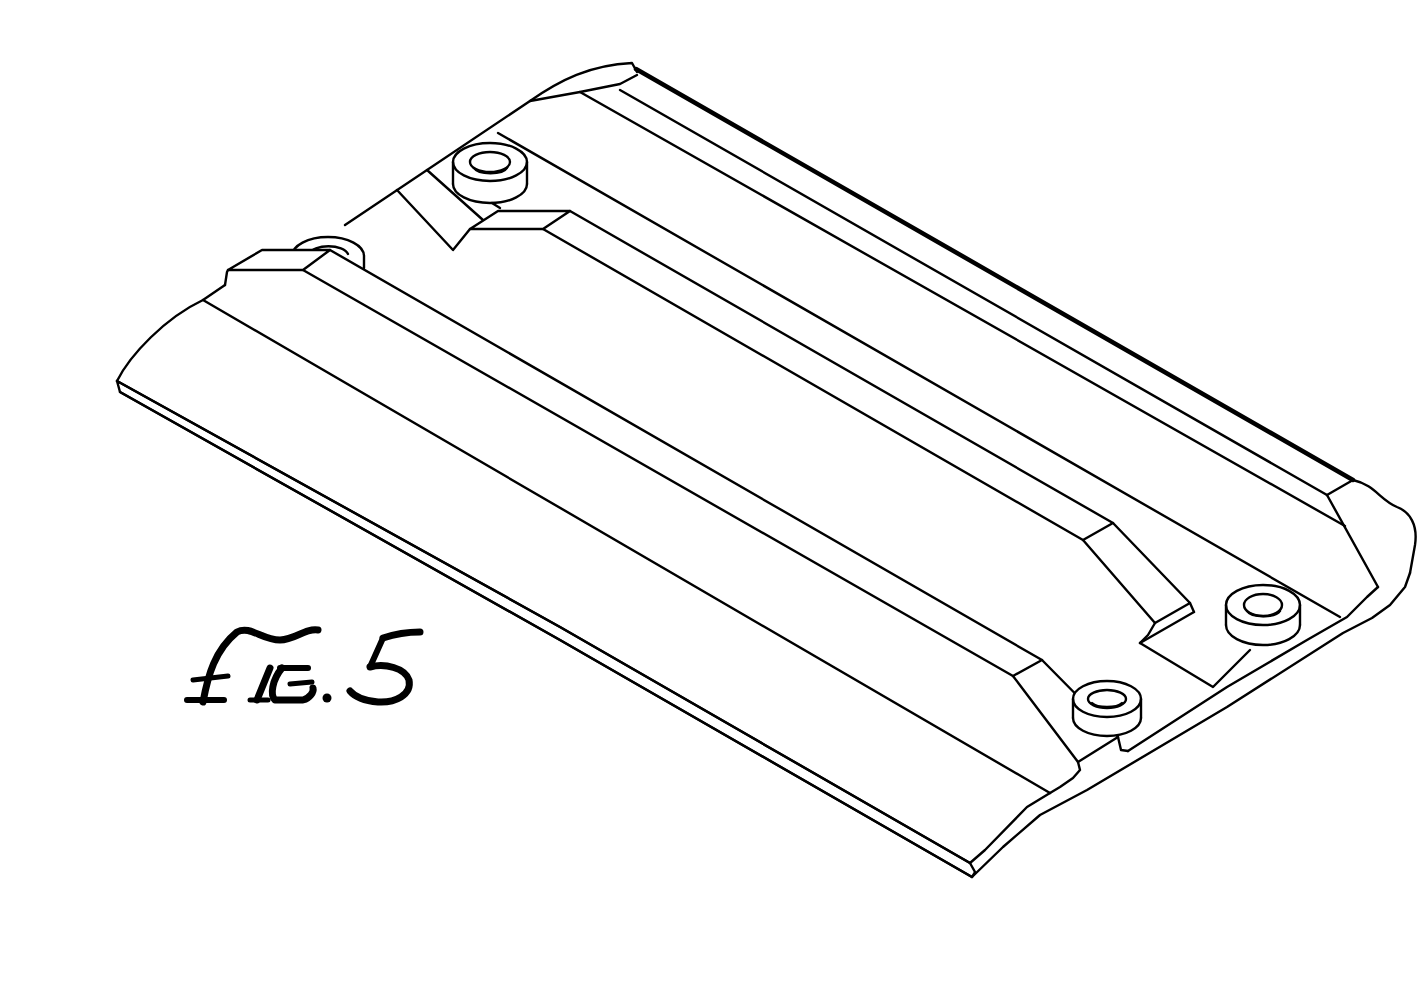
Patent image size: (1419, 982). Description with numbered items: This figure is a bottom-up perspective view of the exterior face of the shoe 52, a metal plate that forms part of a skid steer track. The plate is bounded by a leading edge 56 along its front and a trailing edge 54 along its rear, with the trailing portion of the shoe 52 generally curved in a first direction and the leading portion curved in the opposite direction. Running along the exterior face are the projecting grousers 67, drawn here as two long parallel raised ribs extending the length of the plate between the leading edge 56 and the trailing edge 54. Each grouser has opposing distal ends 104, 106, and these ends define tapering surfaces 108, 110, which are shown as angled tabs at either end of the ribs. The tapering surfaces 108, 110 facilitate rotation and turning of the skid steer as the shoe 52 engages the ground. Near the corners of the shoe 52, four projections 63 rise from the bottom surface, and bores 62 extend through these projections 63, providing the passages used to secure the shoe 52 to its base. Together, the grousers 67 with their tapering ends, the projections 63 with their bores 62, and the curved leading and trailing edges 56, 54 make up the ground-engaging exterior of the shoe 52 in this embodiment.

The shoe 52 is at (933, 216).
The trailing edge 54 is at (993, 267).
The leading edge 56 is at (683, 650).
The bores 62 is at (488, 158).
The projections 63 is at (467, 155).
The projecting grousers 67 is at (710, 420).
The distal end 104 is at (397, 190).
The distal end 106 is at (1185, 615).
The tapering surface 108 is at (528, 220).
The tapering surface 110 is at (1130, 567).